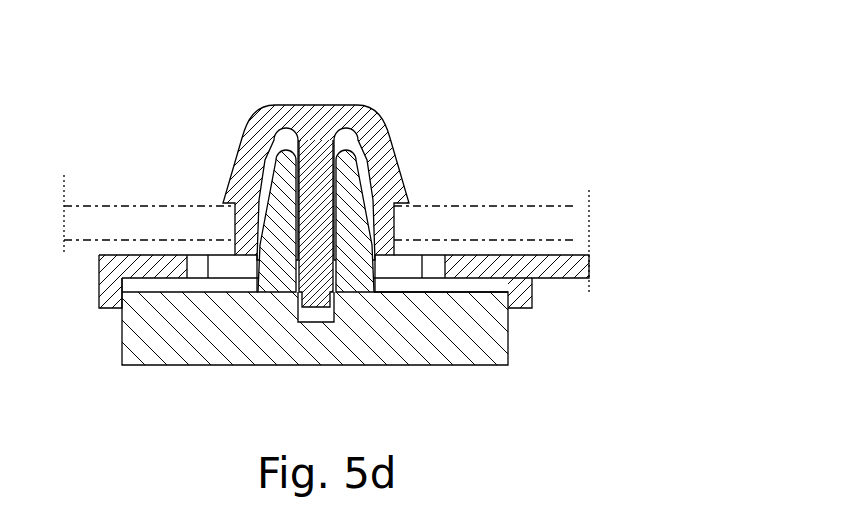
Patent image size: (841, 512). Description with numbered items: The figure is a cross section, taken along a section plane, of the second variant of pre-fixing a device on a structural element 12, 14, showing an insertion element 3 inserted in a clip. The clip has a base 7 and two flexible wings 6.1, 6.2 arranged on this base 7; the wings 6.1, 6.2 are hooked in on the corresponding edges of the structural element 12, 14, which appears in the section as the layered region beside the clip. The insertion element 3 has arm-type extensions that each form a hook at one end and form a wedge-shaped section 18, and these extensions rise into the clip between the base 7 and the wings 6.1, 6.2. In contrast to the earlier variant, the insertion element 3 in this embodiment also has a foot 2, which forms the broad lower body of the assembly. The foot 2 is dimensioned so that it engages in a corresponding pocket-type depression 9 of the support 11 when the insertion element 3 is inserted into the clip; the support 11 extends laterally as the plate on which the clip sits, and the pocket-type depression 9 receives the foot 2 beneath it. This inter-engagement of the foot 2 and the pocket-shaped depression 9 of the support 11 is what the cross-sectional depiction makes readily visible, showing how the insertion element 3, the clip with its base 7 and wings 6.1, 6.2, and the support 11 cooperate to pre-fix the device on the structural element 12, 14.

The foot 2 is at (440, 348).
The insertion element 3 is at (311, 242).
The flexible wing 6.1 is at (250, 158).
The flexible wing 6.2 is at (387, 148).
The base 7 is at (311, 170).
The pocket-type depression 9 is at (471, 290).
The support 11 is at (575, 265).
The structural element 12 is at (567, 226).
The structural element 14 is at (388, 239).
The wedge-shaped section 18 is at (272, 211).